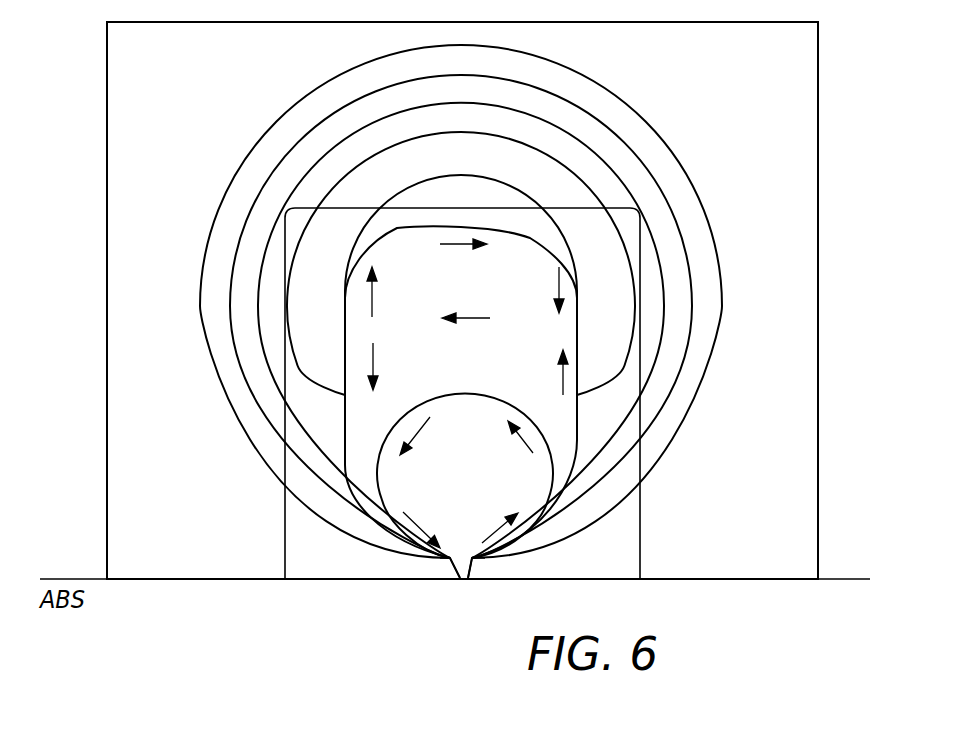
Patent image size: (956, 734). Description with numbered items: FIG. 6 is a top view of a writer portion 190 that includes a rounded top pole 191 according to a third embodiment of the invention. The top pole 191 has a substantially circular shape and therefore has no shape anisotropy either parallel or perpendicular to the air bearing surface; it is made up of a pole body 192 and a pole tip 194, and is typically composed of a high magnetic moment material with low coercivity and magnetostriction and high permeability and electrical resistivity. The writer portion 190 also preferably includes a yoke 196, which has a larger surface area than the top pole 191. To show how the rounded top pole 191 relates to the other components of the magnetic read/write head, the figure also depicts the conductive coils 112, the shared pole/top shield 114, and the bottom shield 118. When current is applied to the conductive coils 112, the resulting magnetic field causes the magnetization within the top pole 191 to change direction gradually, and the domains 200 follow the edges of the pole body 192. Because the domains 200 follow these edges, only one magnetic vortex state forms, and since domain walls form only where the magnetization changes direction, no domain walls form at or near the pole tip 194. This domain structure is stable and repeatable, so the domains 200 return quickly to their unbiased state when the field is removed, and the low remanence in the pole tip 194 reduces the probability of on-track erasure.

The conductive coils 112 is at (280, 172).
The shared pole/top shield 114 is at (606, 552).
The bottom shield 118 is at (762, 80).
The writer portion 190 is at (284, 494).
The rounded top pole 191 is at (583, 436).
The pole body 192 is at (483, 491).
The pole tip 194 is at (463, 580).
The yoke 196 is at (483, 355).
The domains 200 is at (560, 283).